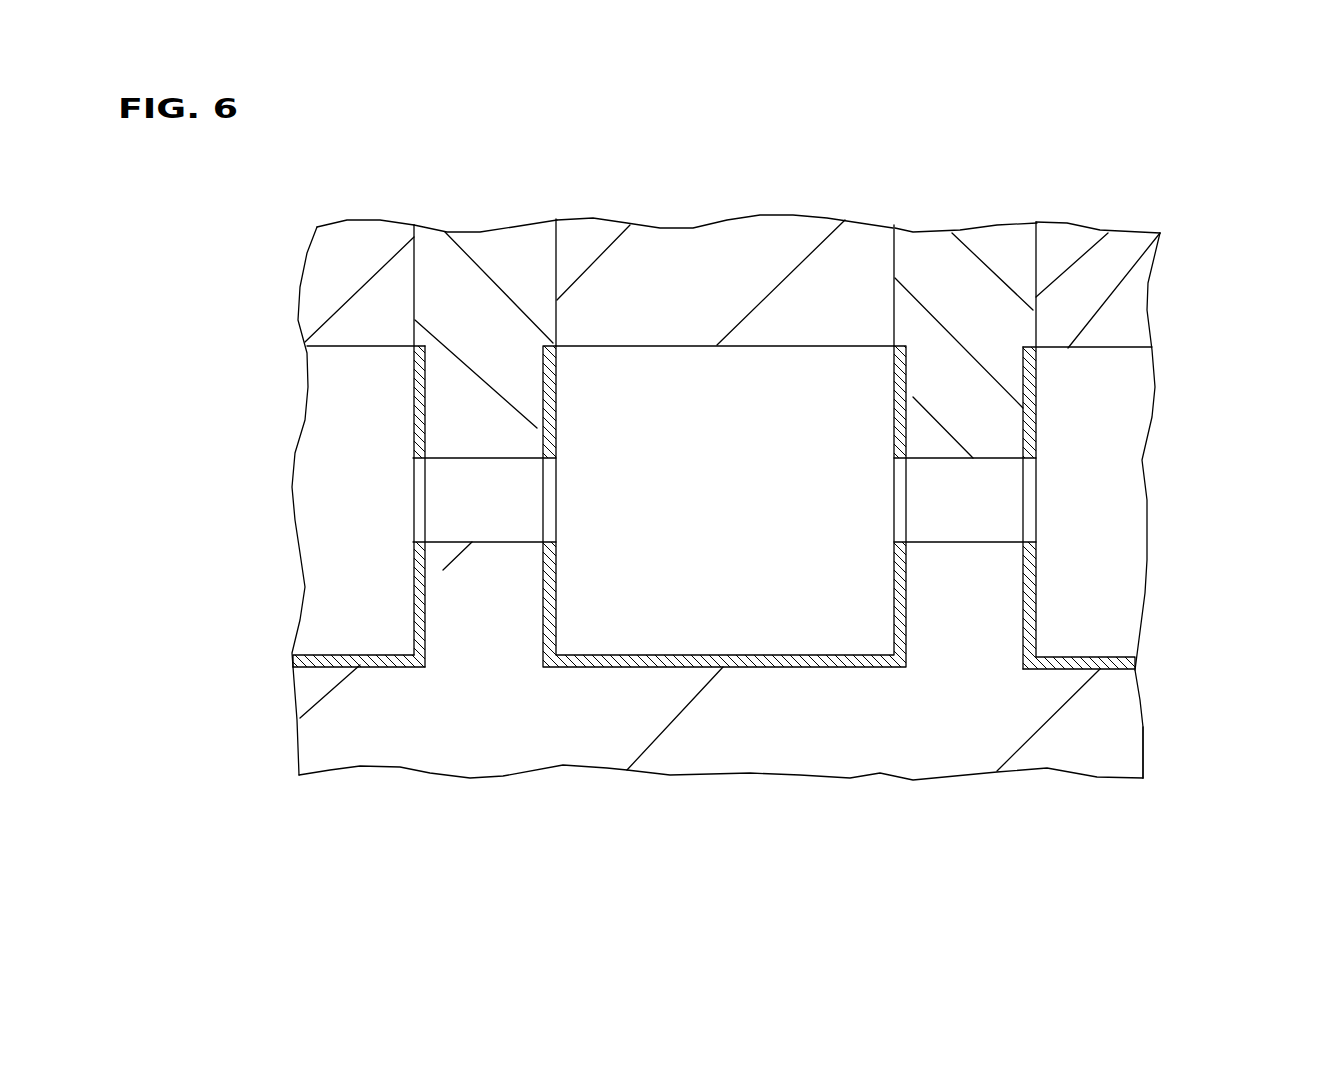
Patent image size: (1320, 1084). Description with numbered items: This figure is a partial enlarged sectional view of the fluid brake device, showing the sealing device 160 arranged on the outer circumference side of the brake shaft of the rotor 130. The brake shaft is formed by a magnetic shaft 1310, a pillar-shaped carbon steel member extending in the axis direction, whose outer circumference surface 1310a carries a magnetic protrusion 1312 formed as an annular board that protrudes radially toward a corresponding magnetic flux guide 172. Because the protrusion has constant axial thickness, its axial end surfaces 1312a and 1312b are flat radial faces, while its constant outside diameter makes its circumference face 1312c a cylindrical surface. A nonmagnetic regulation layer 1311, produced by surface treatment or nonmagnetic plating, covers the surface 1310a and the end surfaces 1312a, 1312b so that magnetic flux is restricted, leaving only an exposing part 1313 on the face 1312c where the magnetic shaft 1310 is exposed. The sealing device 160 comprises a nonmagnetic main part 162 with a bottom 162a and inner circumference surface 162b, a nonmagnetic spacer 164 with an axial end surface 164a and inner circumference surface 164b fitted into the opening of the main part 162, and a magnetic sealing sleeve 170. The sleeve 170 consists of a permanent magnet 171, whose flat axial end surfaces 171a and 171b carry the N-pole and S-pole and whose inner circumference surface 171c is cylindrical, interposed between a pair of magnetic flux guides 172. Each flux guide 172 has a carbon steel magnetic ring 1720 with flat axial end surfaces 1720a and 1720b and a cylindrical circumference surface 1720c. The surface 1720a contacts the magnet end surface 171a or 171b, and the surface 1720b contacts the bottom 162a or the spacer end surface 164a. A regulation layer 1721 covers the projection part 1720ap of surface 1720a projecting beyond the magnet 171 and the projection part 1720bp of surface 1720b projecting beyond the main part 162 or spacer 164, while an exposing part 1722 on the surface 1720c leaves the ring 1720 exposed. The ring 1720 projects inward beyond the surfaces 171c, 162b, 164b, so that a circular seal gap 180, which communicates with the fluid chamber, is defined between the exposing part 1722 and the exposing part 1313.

The sealing device 160 is at (304, 231).
The main part 162 is at (362, 243).
The bottom 162a is at (413, 323).
The inner circumference surface 162b is at (353, 347).
The spacer 164 is at (1122, 240).
The axial end surface 164a is at (1036, 258).
The inner circumference surface 164b is at (1088, 350).
The magnetic sealing sleeve 170 is at (1049, 222).
The permanent magnet 171 is at (773, 237).
The axial end surface 171a is at (556, 307).
The axial end surface 171b is at (897, 308).
The inner circumference surface 171c is at (677, 356).
The magnetic flux guide 172 is at (443, 243).
The magnetic ring 1720 is at (480, 360).
The axial end surface 1720a is at (560, 333).
The projection part 1720ap is at (552, 441).
The axial end surface 1720b is at (413, 342).
The projection part 1720bp is at (413, 398).
The circumference surface 1720c is at (896, 460).
The regulation layer 1721 is at (895, 385).
The exposing part 1722 is at (477, 460).
The seal gap 180 is at (453, 502).
The magnetic shaft 1310 is at (732, 743).
The outer circumference surface 1310a is at (297, 653).
The regulation layer 1311 is at (542, 635).
The magnetic protrusion 1312 is at (470, 590).
The axial end surface 1312a is at (895, 583).
The axial end surface 1312b is at (413, 602).
The circumference face 1312c is at (905, 542).
The exposing part 1313 is at (457, 540).
The rotor 130 is at (1143, 725).